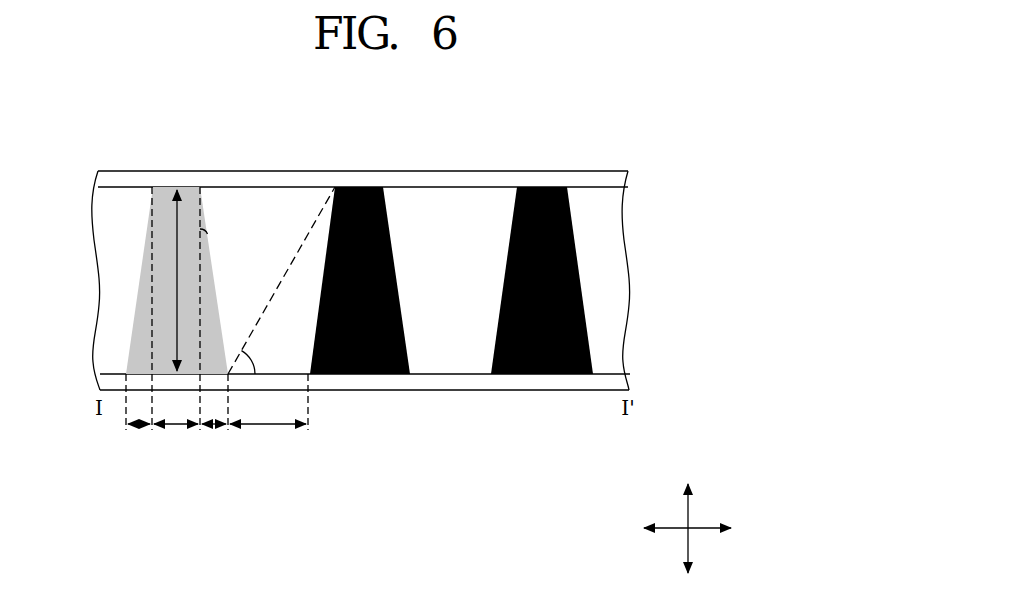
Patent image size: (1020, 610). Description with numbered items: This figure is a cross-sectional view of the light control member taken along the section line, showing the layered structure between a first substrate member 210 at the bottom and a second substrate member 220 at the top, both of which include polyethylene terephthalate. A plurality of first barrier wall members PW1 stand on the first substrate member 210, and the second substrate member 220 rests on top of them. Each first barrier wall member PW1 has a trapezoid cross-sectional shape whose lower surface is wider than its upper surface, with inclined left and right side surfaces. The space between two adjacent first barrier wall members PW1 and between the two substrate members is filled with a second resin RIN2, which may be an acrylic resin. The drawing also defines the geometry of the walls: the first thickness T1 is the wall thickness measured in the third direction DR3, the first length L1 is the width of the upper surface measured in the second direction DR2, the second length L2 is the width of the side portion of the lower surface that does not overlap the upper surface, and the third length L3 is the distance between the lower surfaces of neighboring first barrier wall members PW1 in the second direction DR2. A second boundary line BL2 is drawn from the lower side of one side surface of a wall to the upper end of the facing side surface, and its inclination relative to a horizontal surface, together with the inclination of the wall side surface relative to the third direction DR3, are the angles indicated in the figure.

The second substrate member 220 is at (622, 180).
The first substrate member 210 is at (622, 380).
The second resin RIN2 is at (622, 275).
The first barrier wall members PW1 is at (583, 297).
The first thickness T1 is at (177, 210).
The second boundary line BL2 is at (281, 280).
The first length L1 is at (176, 439).
The second length L2 is at (176, 439).
The third length L3 is at (268, 439).
The second direction DR2 is at (710, 528).
The third direction DR3 is at (688, 514).